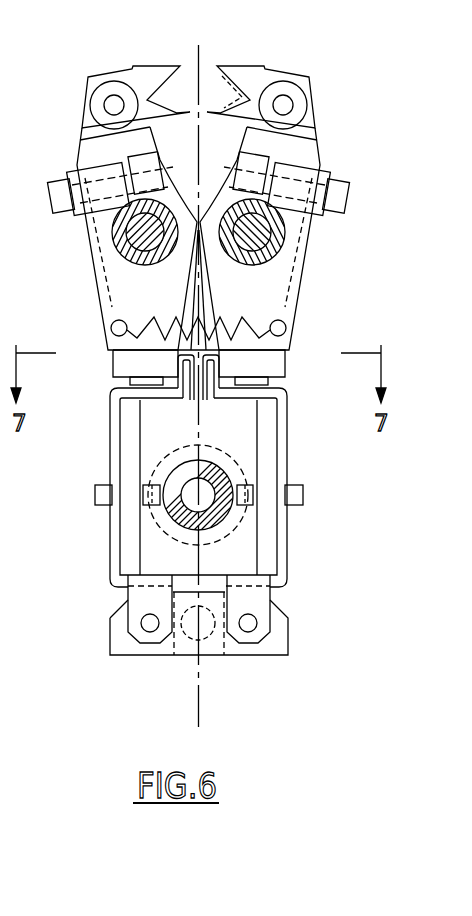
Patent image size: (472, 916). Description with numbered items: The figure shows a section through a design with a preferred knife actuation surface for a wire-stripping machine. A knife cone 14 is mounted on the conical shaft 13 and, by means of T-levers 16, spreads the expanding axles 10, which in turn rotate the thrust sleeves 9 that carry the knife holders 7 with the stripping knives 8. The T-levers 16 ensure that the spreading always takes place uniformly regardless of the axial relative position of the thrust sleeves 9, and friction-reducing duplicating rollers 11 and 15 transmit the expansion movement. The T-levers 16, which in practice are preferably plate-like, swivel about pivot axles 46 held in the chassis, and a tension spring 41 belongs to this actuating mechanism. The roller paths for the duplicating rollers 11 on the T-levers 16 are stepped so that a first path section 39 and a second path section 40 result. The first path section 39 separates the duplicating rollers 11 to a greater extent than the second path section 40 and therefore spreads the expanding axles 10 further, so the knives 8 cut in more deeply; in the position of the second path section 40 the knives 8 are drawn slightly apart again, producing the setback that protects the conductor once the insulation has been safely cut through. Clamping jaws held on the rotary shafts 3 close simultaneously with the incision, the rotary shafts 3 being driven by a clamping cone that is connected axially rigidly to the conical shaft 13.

The rotary shaft 3 is at (117, 212).
The knife holder 7 is at (310, 155).
The stripping knife 8 is at (250, 73).
The thrust sleeve 9 is at (287, 228).
The expanding axles 10 is at (280, 272).
The duplicating roller 11 is at (273, 363).
The conical shaft 13 is at (223, 522).
The knife cone 14 is at (243, 473).
The duplicating roller 15 is at (93, 497).
The T-lever 16 is at (110, 557).
The first path section 39 is at (176, 385).
The second path section 40 is at (184, 380).
The tension spring 41 is at (130, 318).
The pivot axle 46 is at (148, 633).